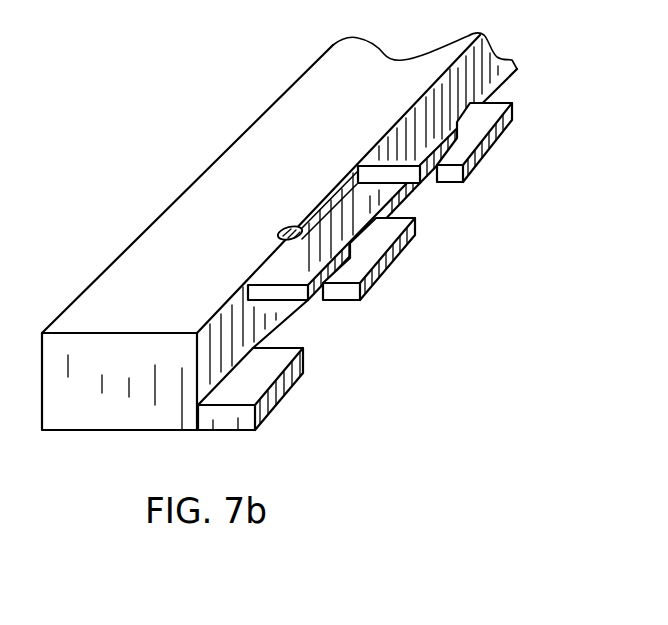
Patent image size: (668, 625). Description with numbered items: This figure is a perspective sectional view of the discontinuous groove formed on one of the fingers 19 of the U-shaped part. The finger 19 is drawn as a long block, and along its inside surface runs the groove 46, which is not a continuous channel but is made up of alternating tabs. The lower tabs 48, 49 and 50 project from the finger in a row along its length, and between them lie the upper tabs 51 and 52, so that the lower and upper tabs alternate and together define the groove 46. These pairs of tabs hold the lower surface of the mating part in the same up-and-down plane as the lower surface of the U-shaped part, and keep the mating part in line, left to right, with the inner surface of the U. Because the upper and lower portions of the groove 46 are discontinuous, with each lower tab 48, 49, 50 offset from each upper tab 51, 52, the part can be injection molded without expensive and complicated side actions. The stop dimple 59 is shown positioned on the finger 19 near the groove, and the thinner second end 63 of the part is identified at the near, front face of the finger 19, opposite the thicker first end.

The finger 19 is at (267, 262).
The groove 46 is at (426, 268).
The lower tab 48 is at (267, 382).
The lower tab 49 is at (398, 258).
The lower tab 50 is at (507, 142).
The upper tab 51 is at (302, 300).
The upper tab 52 is at (438, 178).
The stop dimple 59 is at (287, 228).
The second end 63 is at (87, 415).